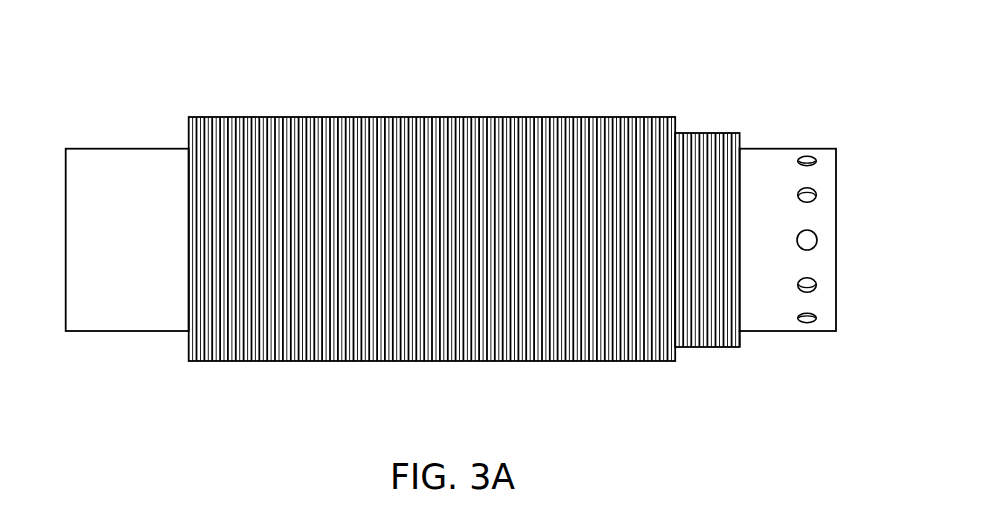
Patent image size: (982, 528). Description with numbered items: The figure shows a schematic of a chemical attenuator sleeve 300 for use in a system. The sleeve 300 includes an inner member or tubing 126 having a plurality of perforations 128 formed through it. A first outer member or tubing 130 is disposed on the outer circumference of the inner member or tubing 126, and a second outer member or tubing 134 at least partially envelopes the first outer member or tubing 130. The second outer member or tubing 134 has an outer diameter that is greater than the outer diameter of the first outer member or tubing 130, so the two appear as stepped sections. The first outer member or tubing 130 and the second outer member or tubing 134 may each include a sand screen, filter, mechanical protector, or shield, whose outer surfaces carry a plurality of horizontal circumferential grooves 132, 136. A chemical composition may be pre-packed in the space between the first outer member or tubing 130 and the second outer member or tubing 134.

The chemical attenuator sleeve 300 is at (268, 52).
The inner member or tubing 126 is at (820, 218).
The perforations 128 is at (807, 222).
The first outer member or tubing 130 is at (730, 340).
The horizontal circumferential grooves 132 is at (708, 125).
The second outer member or tubing 134 is at (432, 206).
The horizontal circumferential grooves 136 is at (542, 110).